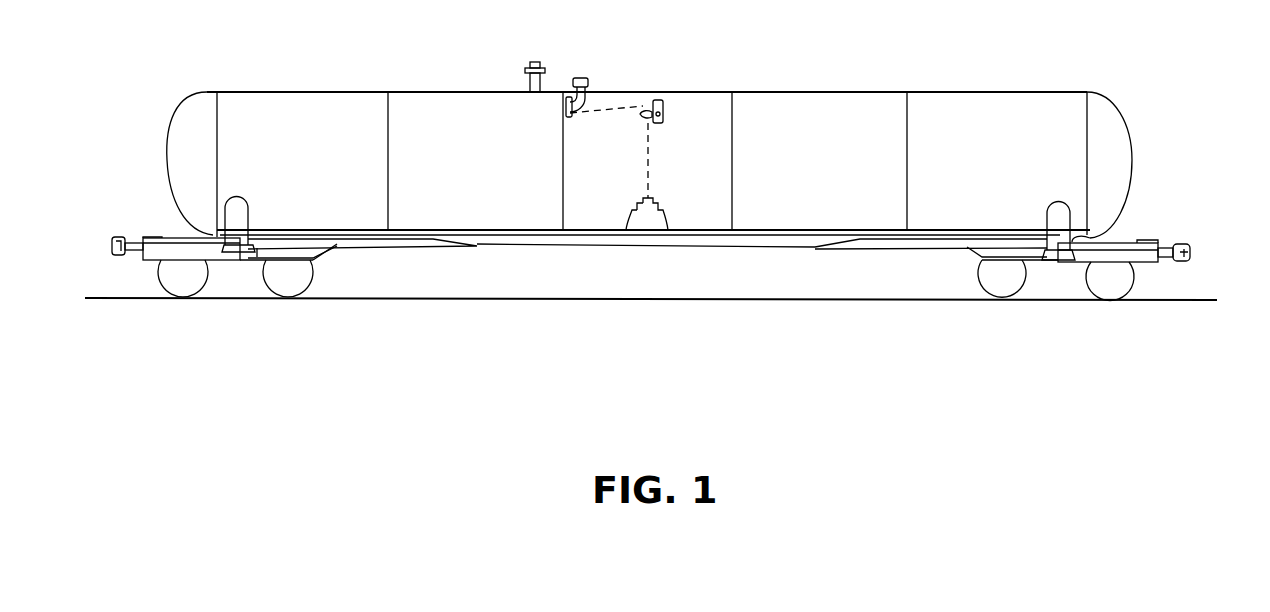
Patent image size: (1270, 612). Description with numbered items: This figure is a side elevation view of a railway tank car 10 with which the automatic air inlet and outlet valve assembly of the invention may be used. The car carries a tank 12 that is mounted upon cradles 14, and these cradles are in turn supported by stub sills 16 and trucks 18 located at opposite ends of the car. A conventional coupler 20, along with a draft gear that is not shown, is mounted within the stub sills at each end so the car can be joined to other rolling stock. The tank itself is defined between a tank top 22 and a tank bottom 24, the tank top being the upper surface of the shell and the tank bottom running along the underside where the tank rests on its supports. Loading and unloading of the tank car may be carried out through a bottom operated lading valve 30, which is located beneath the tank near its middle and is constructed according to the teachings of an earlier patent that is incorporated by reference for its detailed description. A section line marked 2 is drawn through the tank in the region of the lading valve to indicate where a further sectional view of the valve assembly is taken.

The railway tank car 10 is at (709, 128).
The tank 12 is at (827, 78).
The cradles 14 is at (1058, 220).
The stub sills 16 is at (187, 242).
The trucks 18 is at (257, 252).
The coupler 20 is at (1192, 248).
The tank top 22 is at (425, 92).
The tank bottom 24 is at (505, 237).
The bottom operated lading valve 30 is at (647, 222).
The section line 2- 2 is at (690, 263).